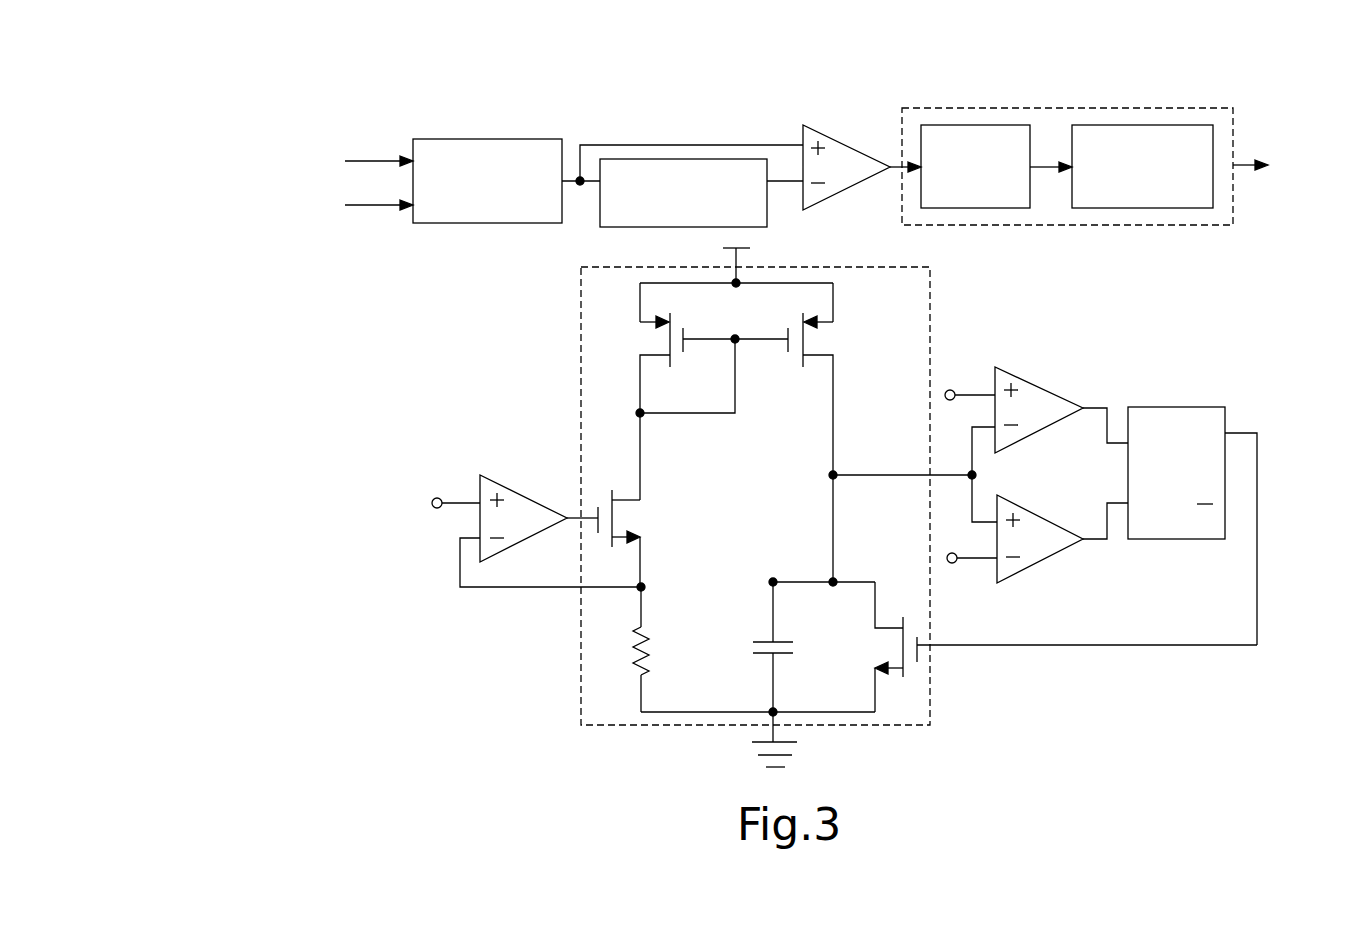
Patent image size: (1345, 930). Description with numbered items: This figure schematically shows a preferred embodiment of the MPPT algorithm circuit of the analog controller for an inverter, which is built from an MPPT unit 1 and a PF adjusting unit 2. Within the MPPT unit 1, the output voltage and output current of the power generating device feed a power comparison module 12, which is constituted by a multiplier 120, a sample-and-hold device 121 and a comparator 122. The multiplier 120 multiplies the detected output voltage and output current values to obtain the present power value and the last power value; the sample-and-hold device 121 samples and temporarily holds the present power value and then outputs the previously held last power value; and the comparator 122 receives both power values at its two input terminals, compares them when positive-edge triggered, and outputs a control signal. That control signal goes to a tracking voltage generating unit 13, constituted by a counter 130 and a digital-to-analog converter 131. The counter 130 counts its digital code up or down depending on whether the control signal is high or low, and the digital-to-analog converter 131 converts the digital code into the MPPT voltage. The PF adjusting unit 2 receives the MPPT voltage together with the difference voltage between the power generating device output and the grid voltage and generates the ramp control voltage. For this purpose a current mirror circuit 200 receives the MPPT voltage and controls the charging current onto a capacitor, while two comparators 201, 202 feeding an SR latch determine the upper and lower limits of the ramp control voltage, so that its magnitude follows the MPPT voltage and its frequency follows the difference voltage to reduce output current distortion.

The MPPT unit 1 is at (446, 108).
The power comparison module 12 is at (530, 43).
The multiplier 120 is at (545, 139).
The sample-and-hold device 121 is at (675, 159).
The comparator 122 is at (861, 150).
The tracking voltage generating unit 13 is at (1035, 108).
The counter 130 is at (972, 125).
The digital-to-analog converter 131 is at (1105, 125).
The PF adjusting unit 2 is at (1192, 345).
The current mirror circuit 200 is at (930, 283).
The comparator 201 is at (1035, 385).
The second comparator 202 is at (1040, 562).